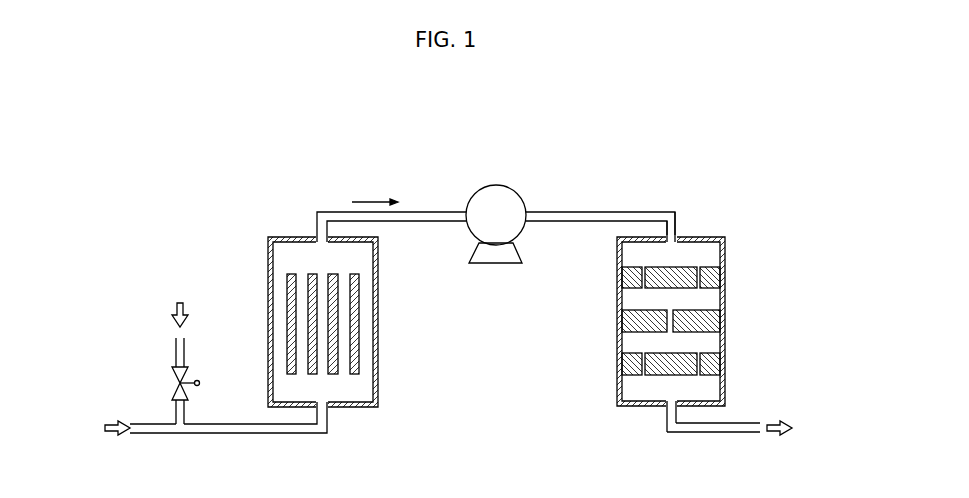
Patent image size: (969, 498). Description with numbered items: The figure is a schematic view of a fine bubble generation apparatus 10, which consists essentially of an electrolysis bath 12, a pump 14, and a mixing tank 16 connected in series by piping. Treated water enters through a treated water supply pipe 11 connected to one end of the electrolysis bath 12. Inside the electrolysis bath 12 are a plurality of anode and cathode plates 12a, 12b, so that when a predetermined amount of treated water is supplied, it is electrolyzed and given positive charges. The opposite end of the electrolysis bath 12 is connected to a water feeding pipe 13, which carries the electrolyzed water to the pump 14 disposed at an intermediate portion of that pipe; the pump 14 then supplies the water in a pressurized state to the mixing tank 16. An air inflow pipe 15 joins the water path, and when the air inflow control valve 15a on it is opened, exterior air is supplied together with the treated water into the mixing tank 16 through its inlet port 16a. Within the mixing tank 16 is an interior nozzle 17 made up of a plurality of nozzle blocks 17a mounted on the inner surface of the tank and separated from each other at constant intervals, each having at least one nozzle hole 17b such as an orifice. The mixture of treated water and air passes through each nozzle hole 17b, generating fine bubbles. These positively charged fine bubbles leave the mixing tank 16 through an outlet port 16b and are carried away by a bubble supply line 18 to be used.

The fine bubble generation apparatus 10 is at (629, 152).
The treated water supply pipe 11 is at (165, 435).
The electrolysis bath 12 is at (293, 238).
The anode plate 12a is at (289, 328).
The cathode plate 12b is at (336, 350).
The water feeding pipe 13 is at (432, 217).
The pump 14 is at (496, 187).
The air inflow pipe 15 is at (176, 352).
The air inflow control valve 15a is at (174, 383).
The mixing tank 16 is at (725, 250).
The inlet port 16a is at (678, 246).
The outlet port 16b is at (670, 393).
The interior nozzle 17 is at (729, 321).
The nozzle block 17a is at (670, 325).
The nozzle hole 17b is at (700, 278).
The bubble supply line 18 is at (713, 433).